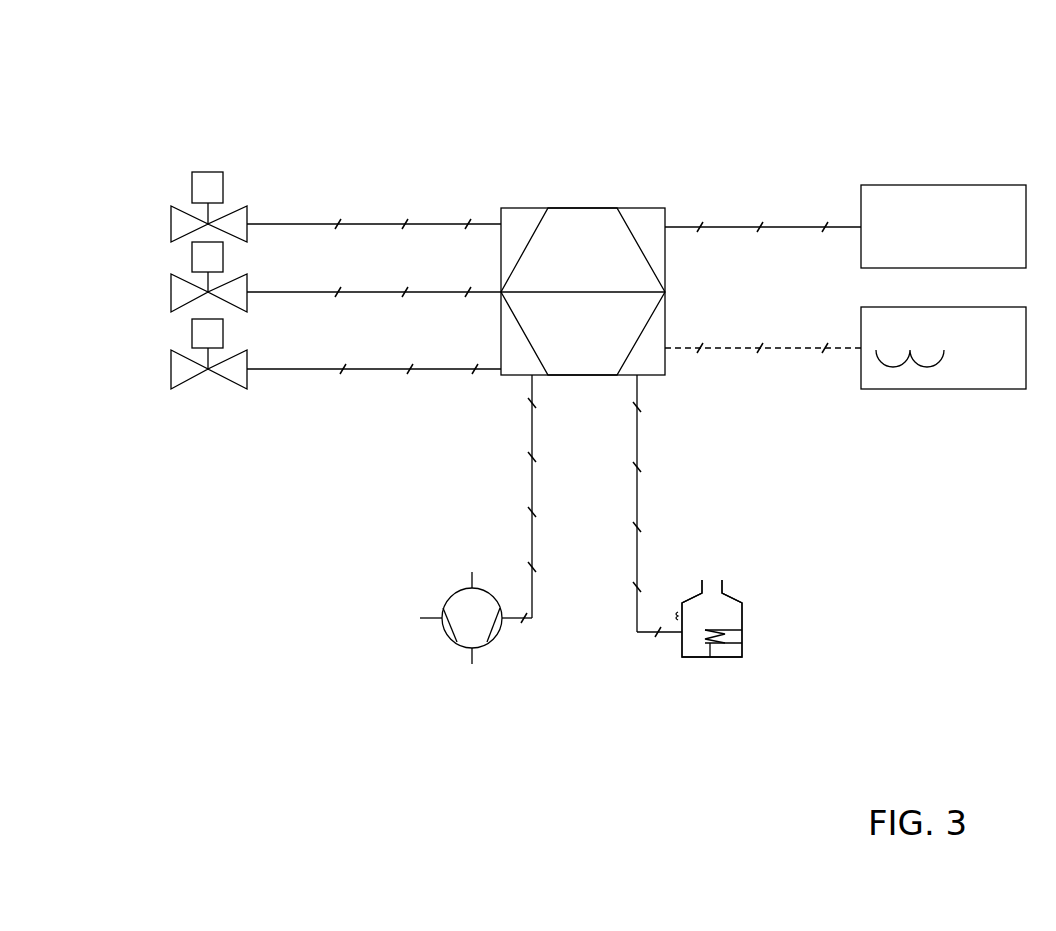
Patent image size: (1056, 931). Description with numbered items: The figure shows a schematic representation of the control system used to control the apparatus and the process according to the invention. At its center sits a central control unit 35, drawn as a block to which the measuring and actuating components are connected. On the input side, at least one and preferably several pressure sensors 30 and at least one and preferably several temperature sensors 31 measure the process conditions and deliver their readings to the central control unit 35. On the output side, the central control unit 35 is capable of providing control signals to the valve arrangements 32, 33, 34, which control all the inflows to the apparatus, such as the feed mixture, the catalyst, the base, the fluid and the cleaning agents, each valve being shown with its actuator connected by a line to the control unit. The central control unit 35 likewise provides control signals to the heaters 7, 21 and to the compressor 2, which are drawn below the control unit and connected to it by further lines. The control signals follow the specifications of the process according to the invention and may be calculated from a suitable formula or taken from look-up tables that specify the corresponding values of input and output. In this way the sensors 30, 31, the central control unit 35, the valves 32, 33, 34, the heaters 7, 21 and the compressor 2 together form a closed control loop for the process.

The compressor 2 is at (442, 618).
The heater 7 is at (742, 615).
The heater 21 is at (712, 618).
The pressure sensor 30 is at (943, 185).
The temperature sensor 31 is at (943, 389).
The valve arrangement 32 is at (249, 371).
The valve arrangement 33 is at (249, 290).
The valve arrangement 34 is at (171, 224).
The central control unit 35 is at (583, 208).